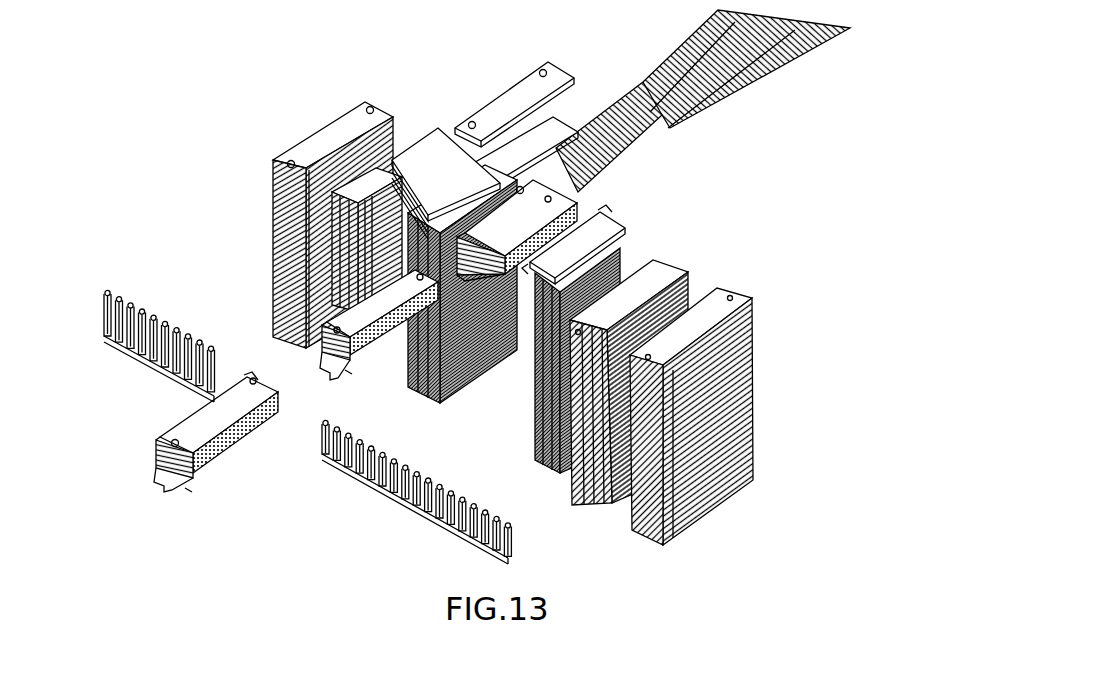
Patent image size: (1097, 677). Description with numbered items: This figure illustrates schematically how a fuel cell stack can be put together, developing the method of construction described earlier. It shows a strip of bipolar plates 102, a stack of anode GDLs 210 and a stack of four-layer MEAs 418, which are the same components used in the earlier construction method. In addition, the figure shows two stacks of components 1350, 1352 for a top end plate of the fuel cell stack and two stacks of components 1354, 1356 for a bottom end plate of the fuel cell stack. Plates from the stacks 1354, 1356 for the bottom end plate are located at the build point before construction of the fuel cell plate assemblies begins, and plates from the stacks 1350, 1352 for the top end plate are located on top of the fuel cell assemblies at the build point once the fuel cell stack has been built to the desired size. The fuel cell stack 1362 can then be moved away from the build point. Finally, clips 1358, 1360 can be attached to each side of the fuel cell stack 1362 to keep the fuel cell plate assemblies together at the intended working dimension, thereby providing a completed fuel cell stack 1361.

The strip of bipolar plates 102 is at (638, 150).
The stack of anode GDLs 210 is at (603, 213).
The stack of 4-layer MEAs 418 is at (418, 186).
The stack of components for top end plate 1350 is at (331, 131).
The stack of components for top end plate 1352 is at (415, 147).
The stack of components for bottom end plate 1354 is at (663, 273).
The stack of components for bottom end plate 1356 is at (719, 310).
The clip 1358 is at (465, 522).
The clip 1360 is at (130, 336).
The completed fuel cell stack 1361 is at (186, 432).
The fuel cell stack 1362 is at (325, 333).